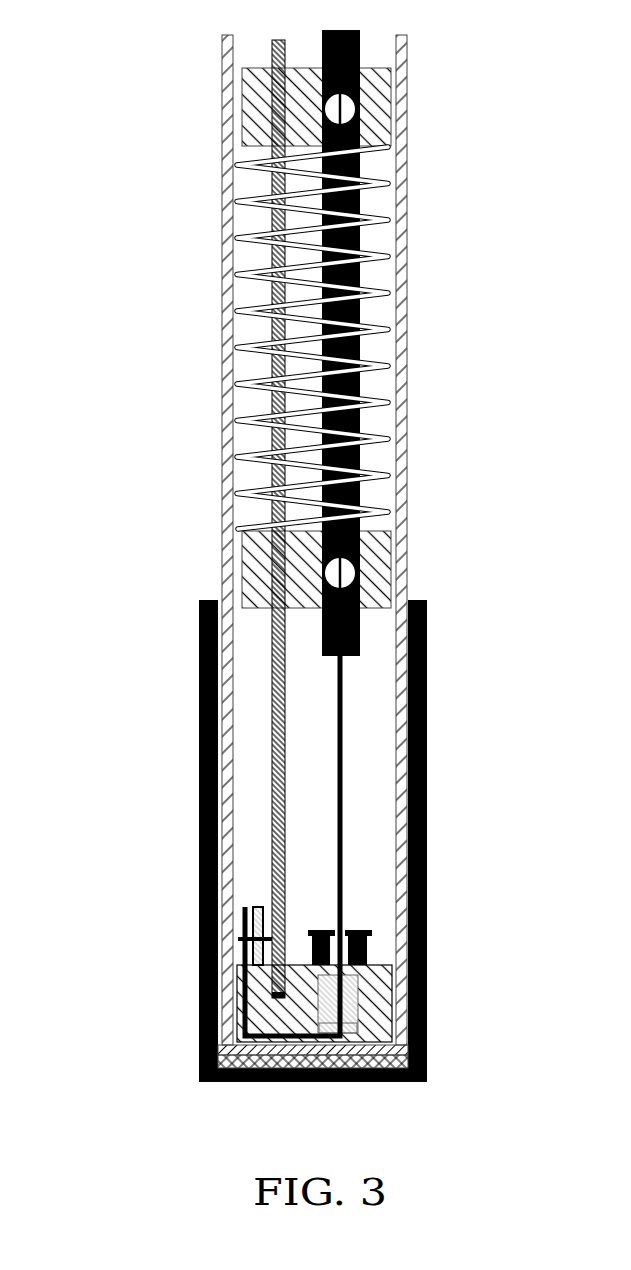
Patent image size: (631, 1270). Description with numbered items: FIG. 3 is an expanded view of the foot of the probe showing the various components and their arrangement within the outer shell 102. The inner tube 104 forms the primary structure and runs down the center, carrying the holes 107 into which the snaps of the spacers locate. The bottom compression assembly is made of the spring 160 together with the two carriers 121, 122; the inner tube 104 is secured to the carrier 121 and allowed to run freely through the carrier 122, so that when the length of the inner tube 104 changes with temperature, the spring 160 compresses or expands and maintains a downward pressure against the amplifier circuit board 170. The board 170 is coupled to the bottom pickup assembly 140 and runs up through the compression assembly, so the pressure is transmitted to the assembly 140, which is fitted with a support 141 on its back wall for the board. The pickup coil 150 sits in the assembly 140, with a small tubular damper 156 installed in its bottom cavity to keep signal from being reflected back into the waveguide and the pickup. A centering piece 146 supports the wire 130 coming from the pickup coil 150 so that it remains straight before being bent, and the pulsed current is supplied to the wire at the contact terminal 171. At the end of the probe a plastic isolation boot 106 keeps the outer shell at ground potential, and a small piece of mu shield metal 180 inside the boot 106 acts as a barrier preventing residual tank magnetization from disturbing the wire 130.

The tube 102 is at (408, 36).
The inner tube 104 is at (357, 650).
The boot 106 is at (427, 1040).
The holes 107 is at (355, 113).
The carrier 121 is at (288, 117).
The carrier 122 is at (375, 585).
The wire 130 is at (340, 806).
The bottom pickup assembly 140 is at (285, 1010).
The support 141 is at (255, 908).
The centering piece 146 is at (350, 1030).
The pickup coil 150 is at (373, 934).
The tubular damper 156 is at (350, 1003).
The spring 160 is at (275, 352).
The amplifier circuit board 170 is at (277, 682).
The contact terminal 171 is at (238, 939).
The mu shield metal 180 is at (267, 1057).